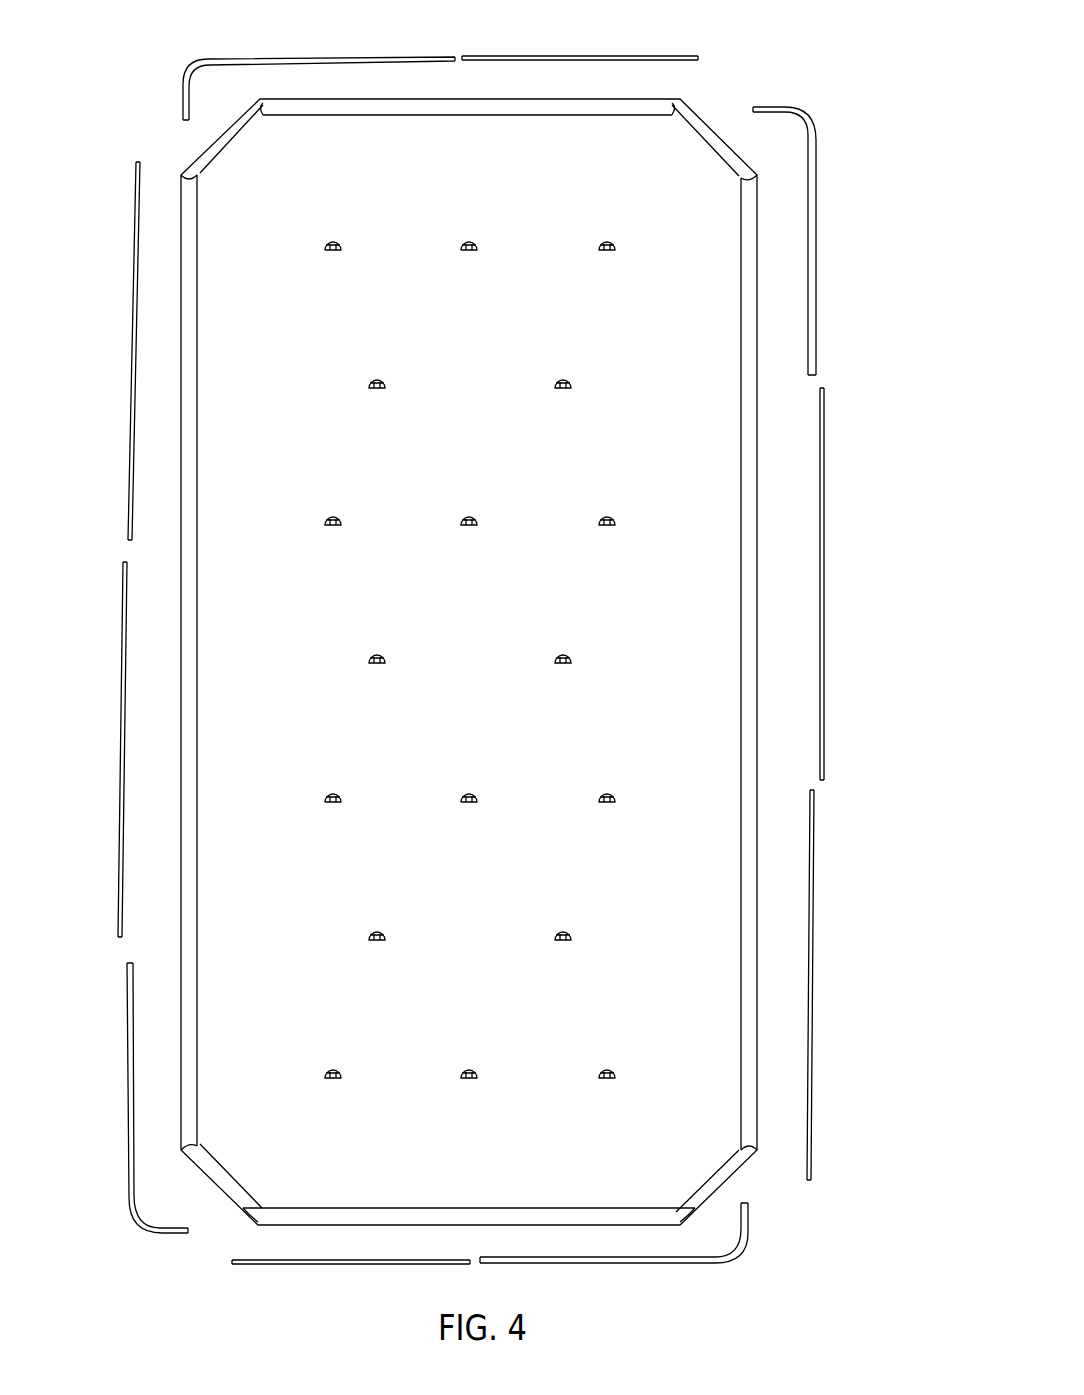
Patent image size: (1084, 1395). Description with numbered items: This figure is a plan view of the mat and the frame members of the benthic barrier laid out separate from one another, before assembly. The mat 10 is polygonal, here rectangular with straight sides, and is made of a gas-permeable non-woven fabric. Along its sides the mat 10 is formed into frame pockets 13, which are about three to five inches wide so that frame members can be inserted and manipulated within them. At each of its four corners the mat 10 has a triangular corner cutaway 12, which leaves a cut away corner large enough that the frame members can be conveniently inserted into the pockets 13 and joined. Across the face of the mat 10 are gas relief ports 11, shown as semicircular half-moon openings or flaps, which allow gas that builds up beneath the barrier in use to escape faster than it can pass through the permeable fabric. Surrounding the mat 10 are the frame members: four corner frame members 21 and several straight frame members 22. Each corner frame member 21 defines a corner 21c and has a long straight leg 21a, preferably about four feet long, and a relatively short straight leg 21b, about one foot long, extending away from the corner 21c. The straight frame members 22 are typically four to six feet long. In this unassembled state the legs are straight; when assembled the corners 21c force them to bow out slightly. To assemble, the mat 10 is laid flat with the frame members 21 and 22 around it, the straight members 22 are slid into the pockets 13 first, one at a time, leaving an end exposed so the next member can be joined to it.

The mat 10 is at (469, 662).
The gas relief ports 11 is at (473, 516).
The corner cutaway 12 is at (232, 143).
The frame pockets 13 is at (476, 105).
The corner frame members 21 is at (504, 664).
The long straight leg 21a is at (347, 57).
The short straight leg 21b is at (183, 97).
The corner 21c is at (195, 67).
The straight frame members 22 is at (571, 55).